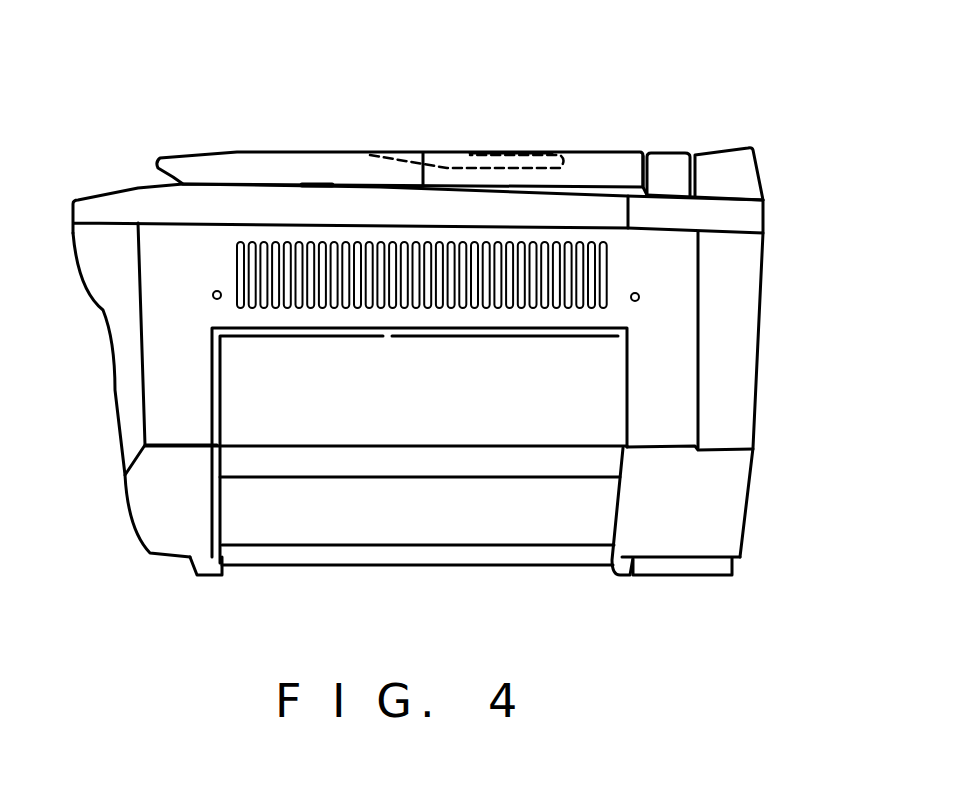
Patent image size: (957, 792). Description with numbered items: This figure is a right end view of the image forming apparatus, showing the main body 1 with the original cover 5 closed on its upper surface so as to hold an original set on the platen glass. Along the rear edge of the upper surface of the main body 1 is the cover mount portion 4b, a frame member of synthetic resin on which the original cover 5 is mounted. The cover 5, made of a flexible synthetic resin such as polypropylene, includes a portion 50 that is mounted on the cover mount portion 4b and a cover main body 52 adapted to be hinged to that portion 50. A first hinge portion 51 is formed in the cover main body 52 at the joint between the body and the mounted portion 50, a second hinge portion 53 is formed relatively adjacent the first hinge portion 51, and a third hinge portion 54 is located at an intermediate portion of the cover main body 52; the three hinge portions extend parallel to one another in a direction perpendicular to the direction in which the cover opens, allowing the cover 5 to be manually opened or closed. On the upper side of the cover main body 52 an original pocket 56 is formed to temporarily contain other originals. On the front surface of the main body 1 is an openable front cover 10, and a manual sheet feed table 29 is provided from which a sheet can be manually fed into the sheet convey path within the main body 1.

The main body 1 is at (783, 276).
The cover mount portion 4b is at (742, 195).
The original cover 5 is at (545, 148).
The front cover 10 is at (120, 314).
The manual sheet feed table 29 is at (403, 432).
The mounted portion 50 is at (740, 157).
The first hinge portion 51 is at (695, 152).
The cover main body 52 is at (303, 158).
The second hinge portion 53 is at (645, 150).
The third hinge portion 54 is at (423, 155).
The original pocket 56 is at (495, 155).